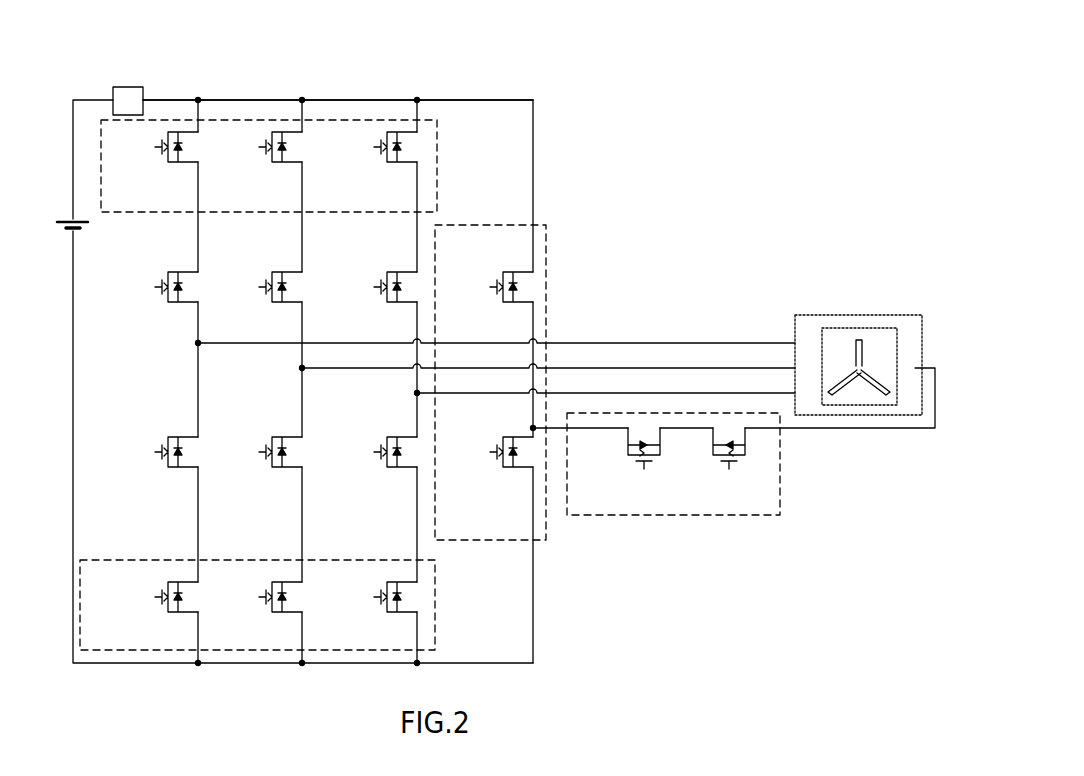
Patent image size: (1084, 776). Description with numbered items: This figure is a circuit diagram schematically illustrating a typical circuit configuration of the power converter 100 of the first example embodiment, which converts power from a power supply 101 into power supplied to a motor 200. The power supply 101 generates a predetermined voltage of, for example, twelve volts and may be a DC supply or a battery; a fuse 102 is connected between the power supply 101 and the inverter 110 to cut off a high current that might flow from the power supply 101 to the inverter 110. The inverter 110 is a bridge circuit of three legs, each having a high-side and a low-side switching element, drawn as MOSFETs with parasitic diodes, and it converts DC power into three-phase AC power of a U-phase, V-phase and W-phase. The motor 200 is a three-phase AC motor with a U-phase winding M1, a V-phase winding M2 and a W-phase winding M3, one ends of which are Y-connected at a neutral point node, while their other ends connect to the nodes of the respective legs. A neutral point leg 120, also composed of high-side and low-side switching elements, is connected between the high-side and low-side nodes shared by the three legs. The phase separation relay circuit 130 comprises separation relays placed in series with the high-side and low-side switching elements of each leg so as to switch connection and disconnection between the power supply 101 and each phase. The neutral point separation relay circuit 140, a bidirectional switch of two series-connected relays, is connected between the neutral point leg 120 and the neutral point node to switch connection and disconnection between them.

The power converter 100 is at (640, 158).
The power supply 101 is at (68, 231).
The fuse 102 is at (136, 87).
The inverter 110 is at (319, 93).
The neutral point leg 120 is at (516, 382).
The phase separation relay circuit 130 is at (282, 383).
The neutral point separation relay circuit 140 is at (673, 497).
The motor 200 is at (873, 370).
The U-phase winding M1 is at (862, 362).
The V-phase winding M2 is at (842, 395).
The W-phase winding M3 is at (880, 393).